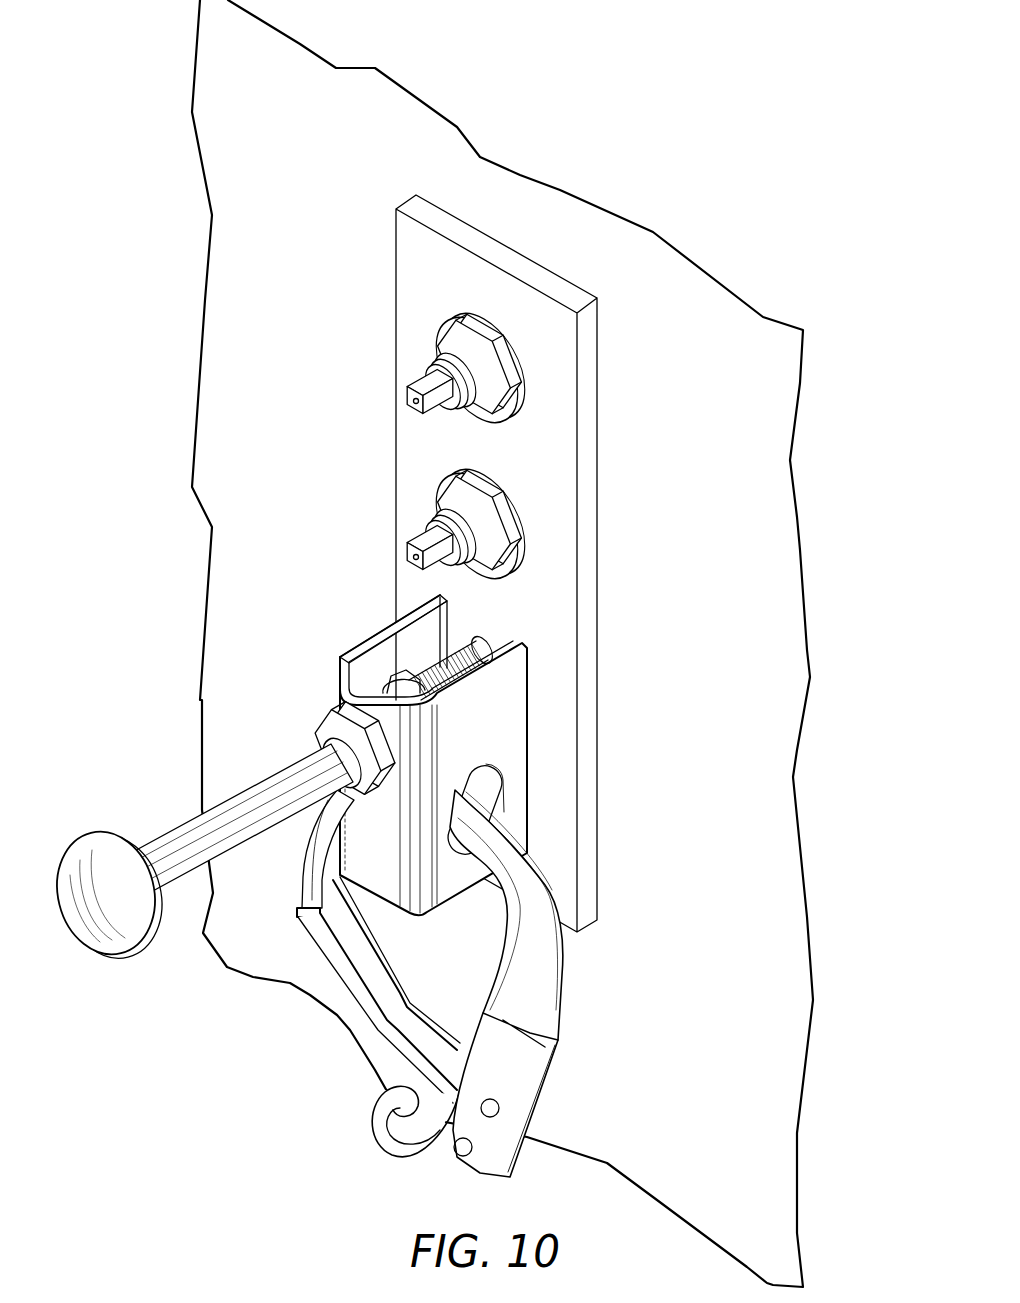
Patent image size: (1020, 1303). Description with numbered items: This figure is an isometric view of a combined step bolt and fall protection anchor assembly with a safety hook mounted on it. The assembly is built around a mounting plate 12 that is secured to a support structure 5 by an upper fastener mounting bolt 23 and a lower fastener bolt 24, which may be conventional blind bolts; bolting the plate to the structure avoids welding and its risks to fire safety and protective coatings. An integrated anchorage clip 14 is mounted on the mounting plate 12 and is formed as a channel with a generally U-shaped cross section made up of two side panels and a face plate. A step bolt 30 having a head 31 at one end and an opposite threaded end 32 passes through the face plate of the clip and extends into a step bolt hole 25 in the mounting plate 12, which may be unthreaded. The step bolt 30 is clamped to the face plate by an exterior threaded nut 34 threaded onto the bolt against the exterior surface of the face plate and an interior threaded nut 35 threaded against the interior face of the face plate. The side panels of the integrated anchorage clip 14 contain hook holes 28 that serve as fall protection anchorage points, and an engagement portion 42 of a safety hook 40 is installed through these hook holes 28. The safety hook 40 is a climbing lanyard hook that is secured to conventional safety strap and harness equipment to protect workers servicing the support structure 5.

The support structure 5 is at (667, 263).
The mounting plate 12 is at (422, 296).
The integrated anchorage clip 14 is at (500, 755).
The upper fastener mounting bolt 23 is at (493, 374).
The lower fastener bolt 24 is at (487, 530).
The step bolt hole 25 is at (473, 657).
The hook holes 28 is at (490, 794).
The step bolt 30 is at (177, 850).
The head 31 is at (93, 920).
The threaded end 32 is at (437, 680).
The exterior threaded nut 34 is at (367, 715).
The interior threaded nut 35 is at (403, 683).
The safety hook 40 is at (352, 921).
The engagement portion 42 is at (492, 839).